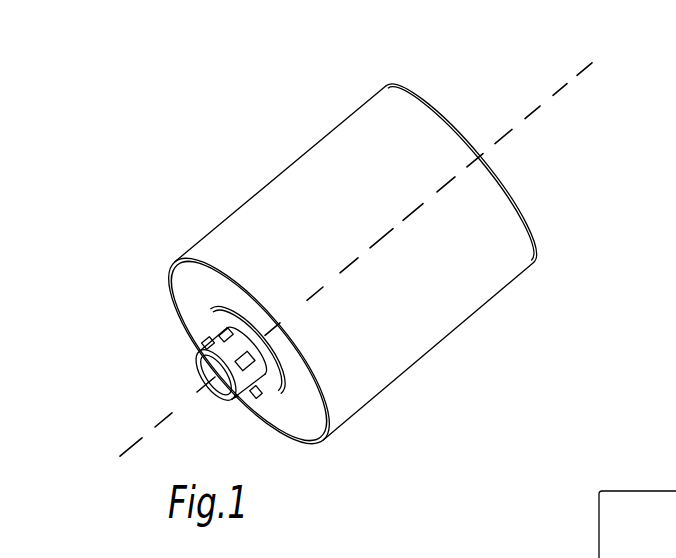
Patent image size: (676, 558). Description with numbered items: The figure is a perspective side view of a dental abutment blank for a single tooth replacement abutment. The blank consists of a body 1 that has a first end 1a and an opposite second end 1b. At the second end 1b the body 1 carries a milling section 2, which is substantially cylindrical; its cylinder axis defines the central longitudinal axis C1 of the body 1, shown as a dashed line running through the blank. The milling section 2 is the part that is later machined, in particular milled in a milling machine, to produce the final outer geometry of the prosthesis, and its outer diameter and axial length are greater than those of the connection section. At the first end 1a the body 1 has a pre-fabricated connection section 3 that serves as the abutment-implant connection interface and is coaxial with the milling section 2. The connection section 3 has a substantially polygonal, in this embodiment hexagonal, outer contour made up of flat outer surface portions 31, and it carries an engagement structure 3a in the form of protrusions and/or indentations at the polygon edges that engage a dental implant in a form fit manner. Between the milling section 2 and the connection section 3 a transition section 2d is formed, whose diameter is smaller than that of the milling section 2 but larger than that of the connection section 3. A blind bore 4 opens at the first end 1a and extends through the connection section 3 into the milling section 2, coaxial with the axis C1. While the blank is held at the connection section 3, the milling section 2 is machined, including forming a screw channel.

The body 1 is at (328, 80).
The first end 1a is at (233, 400).
The second end 1b is at (528, 230).
The milling section 2 is at (300, 155).
The transition section 2d is at (212, 318).
The connection section 3 is at (197, 337).
The engagement structure 3a is at (257, 392).
The flat outer surface portions 31 is at (250, 372).
The blind bore 4 is at (215, 393).
The central longitudinal axis C1 is at (380, 248).